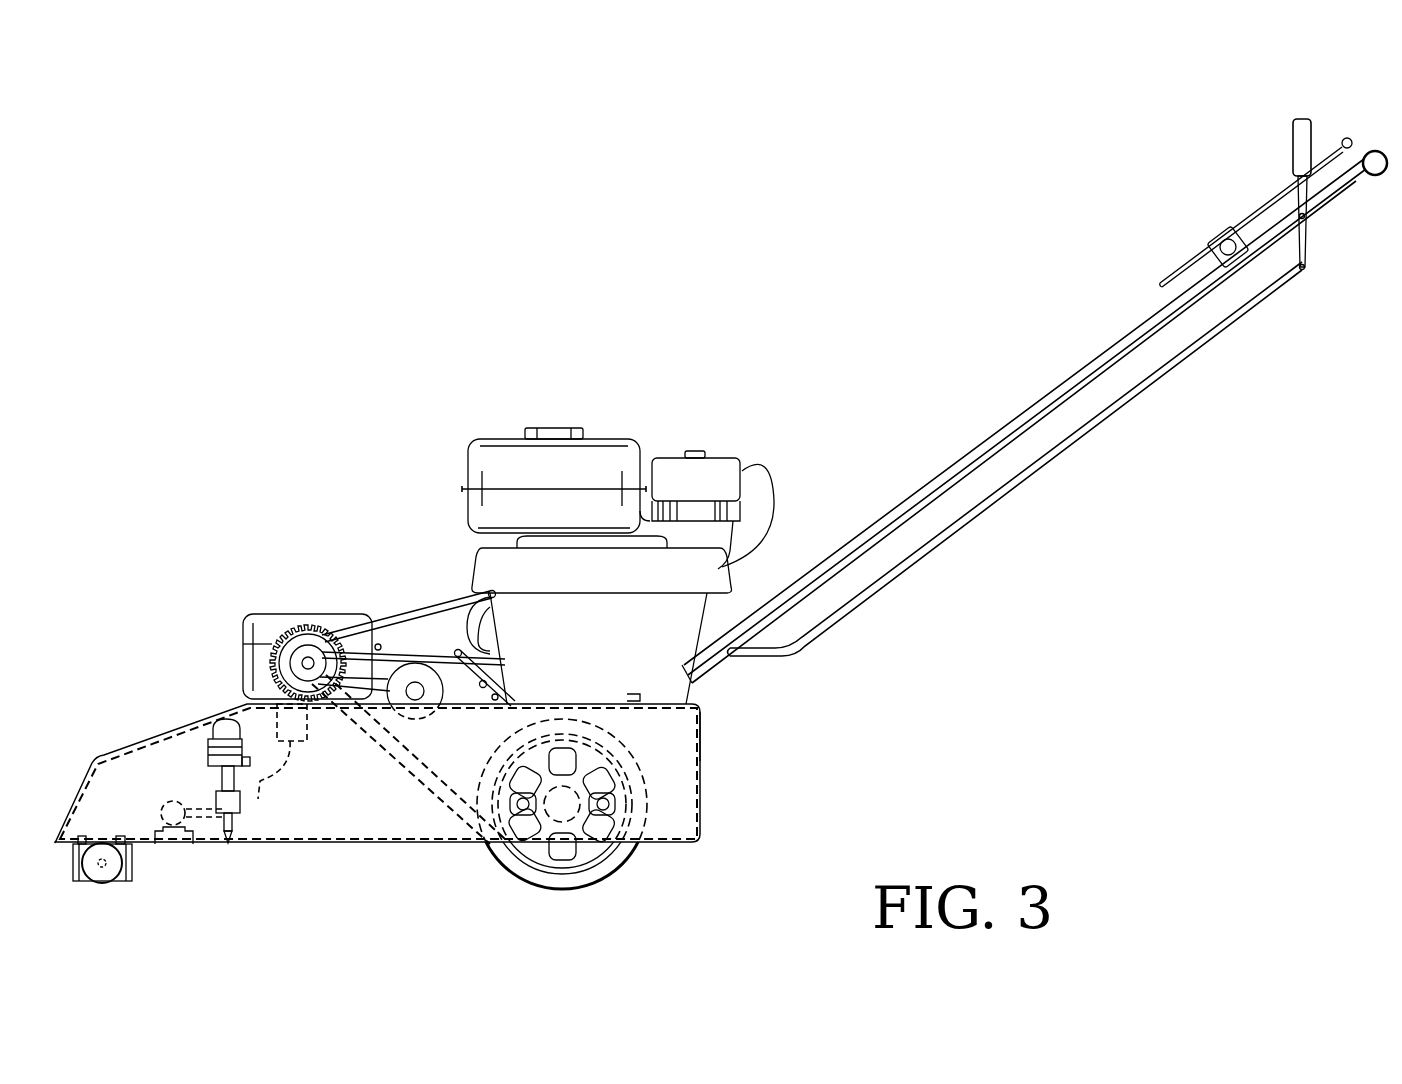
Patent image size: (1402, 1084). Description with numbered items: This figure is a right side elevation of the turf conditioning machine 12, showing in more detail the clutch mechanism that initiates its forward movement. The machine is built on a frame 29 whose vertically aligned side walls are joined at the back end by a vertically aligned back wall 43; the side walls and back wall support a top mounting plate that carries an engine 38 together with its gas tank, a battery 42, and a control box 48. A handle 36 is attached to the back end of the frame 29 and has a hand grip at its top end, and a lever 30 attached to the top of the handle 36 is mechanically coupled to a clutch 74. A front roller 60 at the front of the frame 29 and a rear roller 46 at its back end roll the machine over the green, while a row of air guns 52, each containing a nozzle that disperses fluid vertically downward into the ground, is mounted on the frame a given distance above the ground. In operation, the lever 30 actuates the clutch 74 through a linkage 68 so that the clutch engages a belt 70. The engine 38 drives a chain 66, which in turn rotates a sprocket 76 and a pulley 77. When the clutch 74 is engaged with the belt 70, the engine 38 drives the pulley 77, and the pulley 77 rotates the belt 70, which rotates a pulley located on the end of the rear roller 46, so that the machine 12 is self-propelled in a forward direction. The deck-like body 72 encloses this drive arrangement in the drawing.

The machine 12 is at (325, 435).
The frame 29 is at (933, 718).
The lever 30 is at (1292, 150).
The handle 36 is at (1063, 378).
The engine 38 is at (745, 470).
The battery 42 is at (748, 549).
The back wall 43 is at (703, 740).
The rear roller 46 is at (590, 888).
The control box 48 is at (243, 632).
The air gun 52 is at (208, 752).
The front roller 60 is at (112, 884).
The chain 66 is at (430, 604).
The linkage 68 is at (470, 655).
The belt 70 is at (374, 741).
The deck 72 is at (681, 797).
The clutch 74 is at (430, 720).
The sprocket 76 is at (310, 626).
The pulley 77 is at (290, 663).